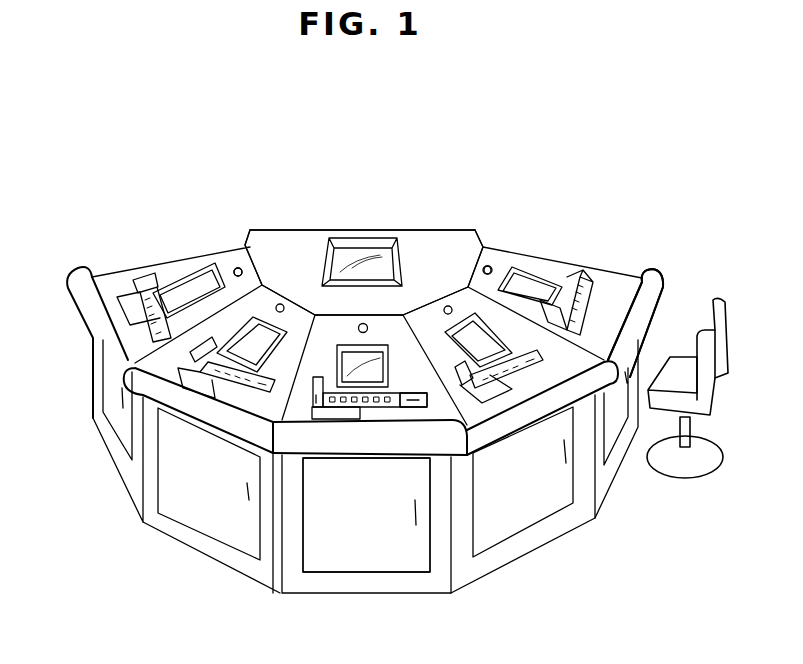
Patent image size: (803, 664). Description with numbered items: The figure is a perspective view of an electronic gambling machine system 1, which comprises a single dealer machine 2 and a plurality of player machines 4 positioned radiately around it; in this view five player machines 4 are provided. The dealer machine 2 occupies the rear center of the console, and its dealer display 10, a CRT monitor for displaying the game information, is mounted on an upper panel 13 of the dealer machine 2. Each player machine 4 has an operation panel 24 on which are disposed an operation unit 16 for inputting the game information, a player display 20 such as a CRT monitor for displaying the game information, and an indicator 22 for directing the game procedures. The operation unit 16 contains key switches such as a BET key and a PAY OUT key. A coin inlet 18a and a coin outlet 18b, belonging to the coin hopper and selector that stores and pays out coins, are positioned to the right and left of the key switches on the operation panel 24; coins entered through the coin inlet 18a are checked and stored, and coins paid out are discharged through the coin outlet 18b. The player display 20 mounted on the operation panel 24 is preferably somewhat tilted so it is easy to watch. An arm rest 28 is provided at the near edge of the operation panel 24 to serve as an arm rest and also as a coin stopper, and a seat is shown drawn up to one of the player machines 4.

The electronic gambling machine system 1 is at (186, 162).
The dealer machine 2 is at (460, 230).
The upper panel 13 is at (418, 236).
The dealer display 10 is at (374, 245).
The indicator 22 is at (358, 327).
The player display 20 is at (378, 356).
The operation unit 16 is at (372, 409).
The operation panel 24 is at (403, 418).
The coin outlet 18b is at (323, 408).
The coin inlet 18a is at (418, 410).
The player machine 4 is at (562, 272).
The arm rest 28 is at (655, 292).